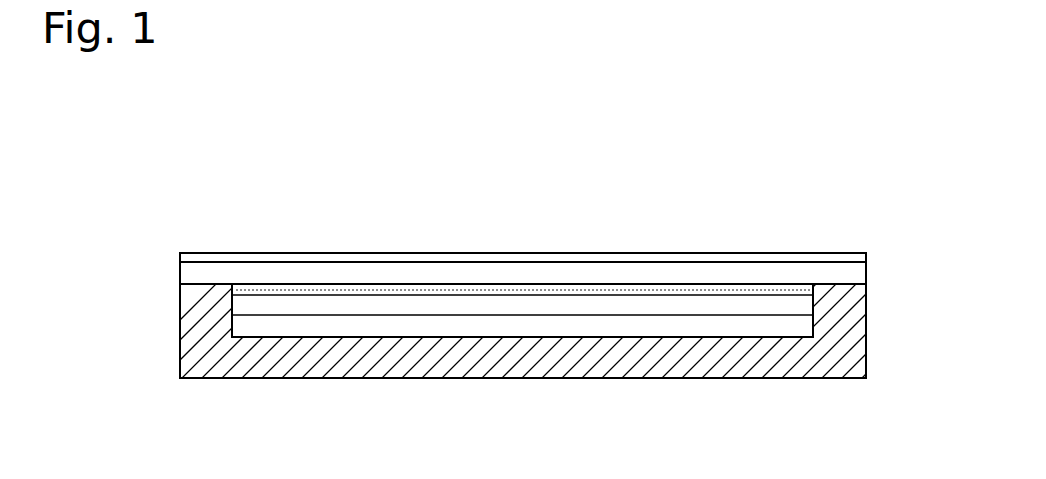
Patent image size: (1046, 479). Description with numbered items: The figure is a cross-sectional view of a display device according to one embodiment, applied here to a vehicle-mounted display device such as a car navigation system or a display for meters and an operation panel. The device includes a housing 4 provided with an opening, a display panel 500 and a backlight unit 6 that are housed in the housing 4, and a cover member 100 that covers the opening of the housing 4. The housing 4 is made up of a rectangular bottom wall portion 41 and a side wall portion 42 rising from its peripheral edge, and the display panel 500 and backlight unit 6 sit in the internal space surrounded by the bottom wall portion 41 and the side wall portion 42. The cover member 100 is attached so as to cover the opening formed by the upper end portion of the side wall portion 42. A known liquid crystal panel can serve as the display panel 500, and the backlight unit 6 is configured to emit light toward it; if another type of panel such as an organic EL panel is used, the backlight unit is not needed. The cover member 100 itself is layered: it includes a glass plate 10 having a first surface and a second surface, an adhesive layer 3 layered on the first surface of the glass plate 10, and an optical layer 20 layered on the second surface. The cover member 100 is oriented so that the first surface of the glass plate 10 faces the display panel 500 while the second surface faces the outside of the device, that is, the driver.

The cover member 100 is at (242, 228).
The optical layer 20 is at (783, 252).
The glass plate 10 is at (857, 272).
The display panel 500 is at (867, 317).
The housing 4 is at (270, 388).
The bottom wall portion 41 is at (455, 366).
The side wall portion 42 is at (192, 316).
The adhesive layer 3 is at (252, 294).
The backlight unit 6 is at (693, 335).